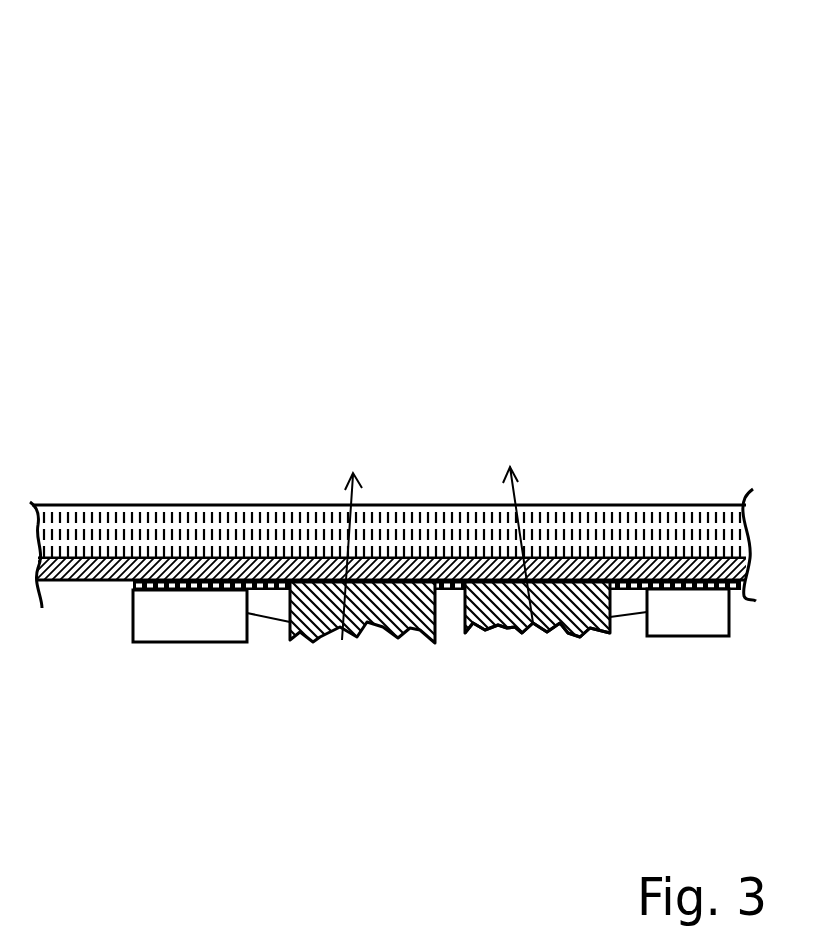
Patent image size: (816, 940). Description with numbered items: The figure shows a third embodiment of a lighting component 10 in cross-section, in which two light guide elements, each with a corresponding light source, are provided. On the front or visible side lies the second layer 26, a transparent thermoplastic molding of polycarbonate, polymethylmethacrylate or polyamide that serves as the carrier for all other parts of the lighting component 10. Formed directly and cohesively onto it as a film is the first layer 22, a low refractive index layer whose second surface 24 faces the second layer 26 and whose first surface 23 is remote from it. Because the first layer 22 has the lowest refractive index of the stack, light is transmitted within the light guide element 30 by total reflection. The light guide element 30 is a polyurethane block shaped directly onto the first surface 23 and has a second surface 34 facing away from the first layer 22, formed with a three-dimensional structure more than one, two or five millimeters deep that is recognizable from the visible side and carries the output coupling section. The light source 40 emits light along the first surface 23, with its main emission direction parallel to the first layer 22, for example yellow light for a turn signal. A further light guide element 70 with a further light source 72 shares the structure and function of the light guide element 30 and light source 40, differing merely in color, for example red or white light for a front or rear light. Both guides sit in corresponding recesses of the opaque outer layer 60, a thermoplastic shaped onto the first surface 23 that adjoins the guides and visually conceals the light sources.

The lighting component 10 is at (600, 119).
The first layer 22 is at (103, 557).
The first surface 23 is at (253, 583).
The second surface 24 is at (187, 570).
The second layer 26 is at (305, 530).
The light guide element 30 is at (588, 598).
The second surface 34 is at (512, 630).
The light source 40 is at (695, 625).
The outer layer 60 is at (273, 590).
The further light guide element 70 is at (402, 600).
The further light source 72 is at (188, 630).